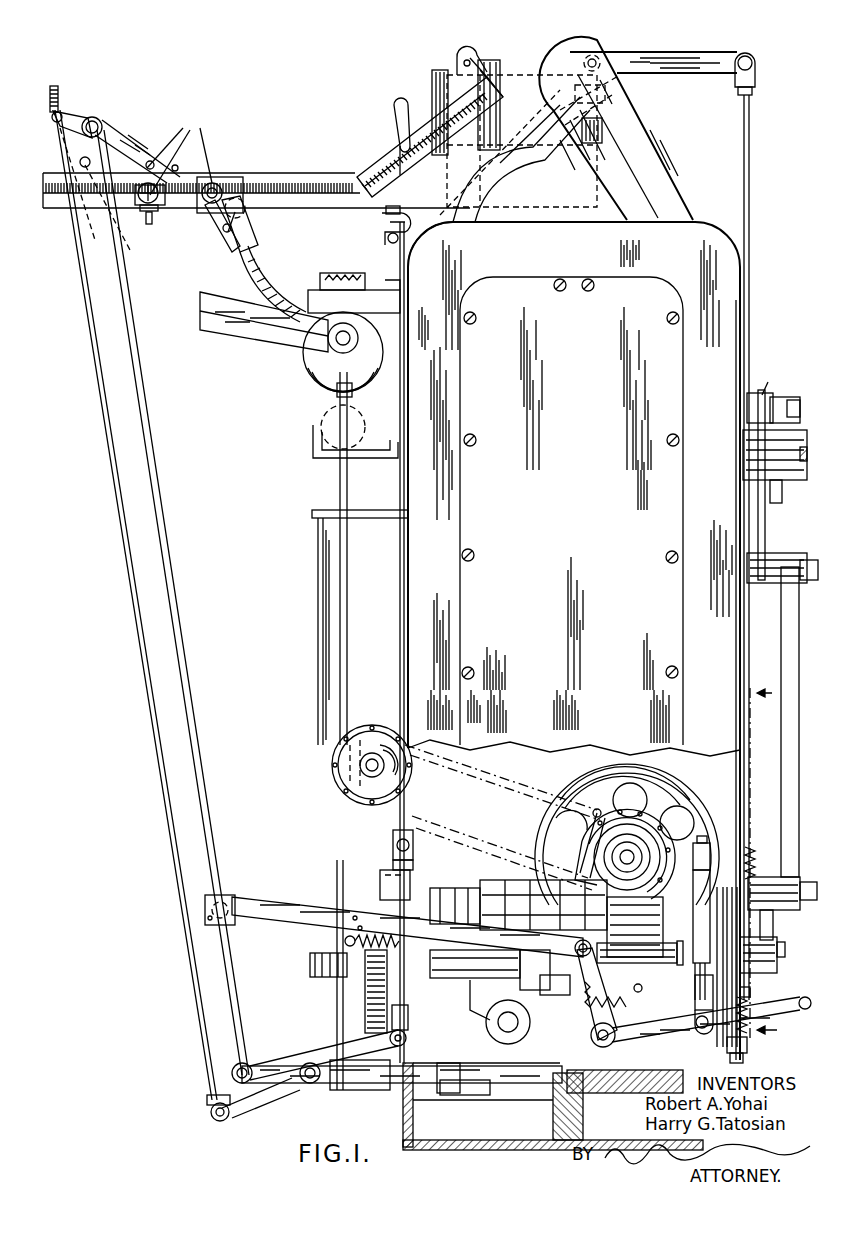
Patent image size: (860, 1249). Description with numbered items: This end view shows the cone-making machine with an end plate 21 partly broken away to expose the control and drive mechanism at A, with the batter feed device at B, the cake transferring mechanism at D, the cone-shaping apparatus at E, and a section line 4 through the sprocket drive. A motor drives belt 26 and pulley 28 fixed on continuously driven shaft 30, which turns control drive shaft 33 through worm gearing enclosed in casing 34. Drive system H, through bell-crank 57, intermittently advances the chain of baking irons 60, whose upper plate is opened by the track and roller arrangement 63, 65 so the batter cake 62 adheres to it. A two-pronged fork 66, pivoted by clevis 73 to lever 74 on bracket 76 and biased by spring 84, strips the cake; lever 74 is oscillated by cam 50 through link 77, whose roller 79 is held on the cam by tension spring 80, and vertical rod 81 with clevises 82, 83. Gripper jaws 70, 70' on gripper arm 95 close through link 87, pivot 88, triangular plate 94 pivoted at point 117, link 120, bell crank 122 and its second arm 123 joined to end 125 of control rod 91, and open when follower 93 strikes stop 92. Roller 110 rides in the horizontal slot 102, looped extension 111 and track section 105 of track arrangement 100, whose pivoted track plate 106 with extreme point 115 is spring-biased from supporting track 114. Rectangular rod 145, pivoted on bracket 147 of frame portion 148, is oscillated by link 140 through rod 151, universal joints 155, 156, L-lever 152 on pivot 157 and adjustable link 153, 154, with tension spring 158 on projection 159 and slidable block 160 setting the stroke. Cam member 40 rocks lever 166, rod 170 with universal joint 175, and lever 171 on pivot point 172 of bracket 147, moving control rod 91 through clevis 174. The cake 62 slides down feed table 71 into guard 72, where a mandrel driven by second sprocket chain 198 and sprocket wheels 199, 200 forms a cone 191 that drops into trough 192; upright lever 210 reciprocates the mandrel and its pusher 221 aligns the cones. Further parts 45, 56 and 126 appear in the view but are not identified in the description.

The plates 21 is at (600, 726).
The belt 26 is at (680, 790).
The pulley 28 is at (690, 805).
The continuously driven shaft 30 is at (620, 855).
The control drive shaft 33 is at (785, 948).
The casing 34 is at (655, 938).
The cam member 40 is at (360, 1005).
The handle 45 is at (397, 112).
The cam 50 is at (750, 992).
The bar 56 is at (781, 630).
The bell-crank 57 is at (765, 520).
The baking irons 60 is at (598, 184).
The batter cake 62 is at (262, 282).
The track 63 is at (612, 95).
The track 65 is at (580, 105).
The two-pronged fork 66 is at (360, 230).
The gripper jaw 70 is at (225, 226).
The gripper jaw 70' is at (250, 224).
The feed table 71 is at (222, 302).
The guard 72 is at (320, 360).
The clevis 73 is at (460, 62).
The lever 74 is at (680, 58).
The bracket 76 is at (590, 45).
The link 77 is at (743, 1060).
The roller 79 is at (606, 60).
The tension spring 80 is at (755, 862).
The vertical rod 81 is at (748, 229).
The clevis 82 is at (747, 1047).
The clevis 83 is at (757, 76).
The spring 84 is at (473, 56).
The link 87 is at (223, 228).
The pivot 88 is at (228, 234).
The control rod 91 is at (56, 100).
The stop 92 is at (152, 224).
The follower 93 is at (150, 212).
The triangular plate 94 is at (190, 160).
The gripper arm 95 is at (136, 143).
The track arrangement 100 is at (393, 160).
The horizontal slot 102 is at (318, 208).
The track section 105 is at (500, 173).
The track plate 106 is at (418, 188).
The roller 110 is at (222, 184).
The looped extension 111 is at (515, 158).
The supporting track 114 is at (440, 92).
The extreme point 115 is at (378, 171).
The pivot point 117 is at (163, 150).
The link 120 is at (133, 232).
The bell crank 122 is at (106, 120).
The second arm 123 is at (78, 118).
The end 125 is at (68, 112).
The pin 126 is at (408, 1025).
The link 140 is at (703, 840).
The rod 145 is at (142, 401).
The bracket 147 is at (345, 1056).
The frame portion 148 is at (250, 1068).
The rod 151 is at (610, 918).
The L-lever 152 is at (645, 1038).
The link section 153 is at (592, 936).
The link section 154 is at (290, 915).
The universal joint 155 is at (693, 895).
The universal joint 156 is at (695, 988).
The pivot 157 is at (596, 1046).
The tension spring 158 is at (615, 1000).
The projection 159 is at (345, 939).
The slidable block 160 is at (233, 897).
The lever 166 is at (393, 842).
The rod 170 is at (385, 880).
The lever 171 is at (268, 1104).
The pivot point 172 is at (306, 1084).
The clevis 174 is at (208, 1100).
The universal joint 175 is at (393, 862).
The cone 191 is at (330, 417).
The trough 192 is at (313, 437).
The second sprocket chain 198 is at (510, 771).
The sprocket wheel 199 is at (372, 800).
The sprocket wheel 200 is at (606, 855).
The upright lever 210 is at (340, 575).
The pusher 221 is at (337, 390).
The section line 4 is at (769, 856).
The control and drive mechanism A is at (514, 820).
The batter feed device B is at (342, 631).
The batter cake transferring mechanism D is at (320, 135).
The cone-shaping apparatus E is at (362, 395).
The drive system H is at (775, 435).